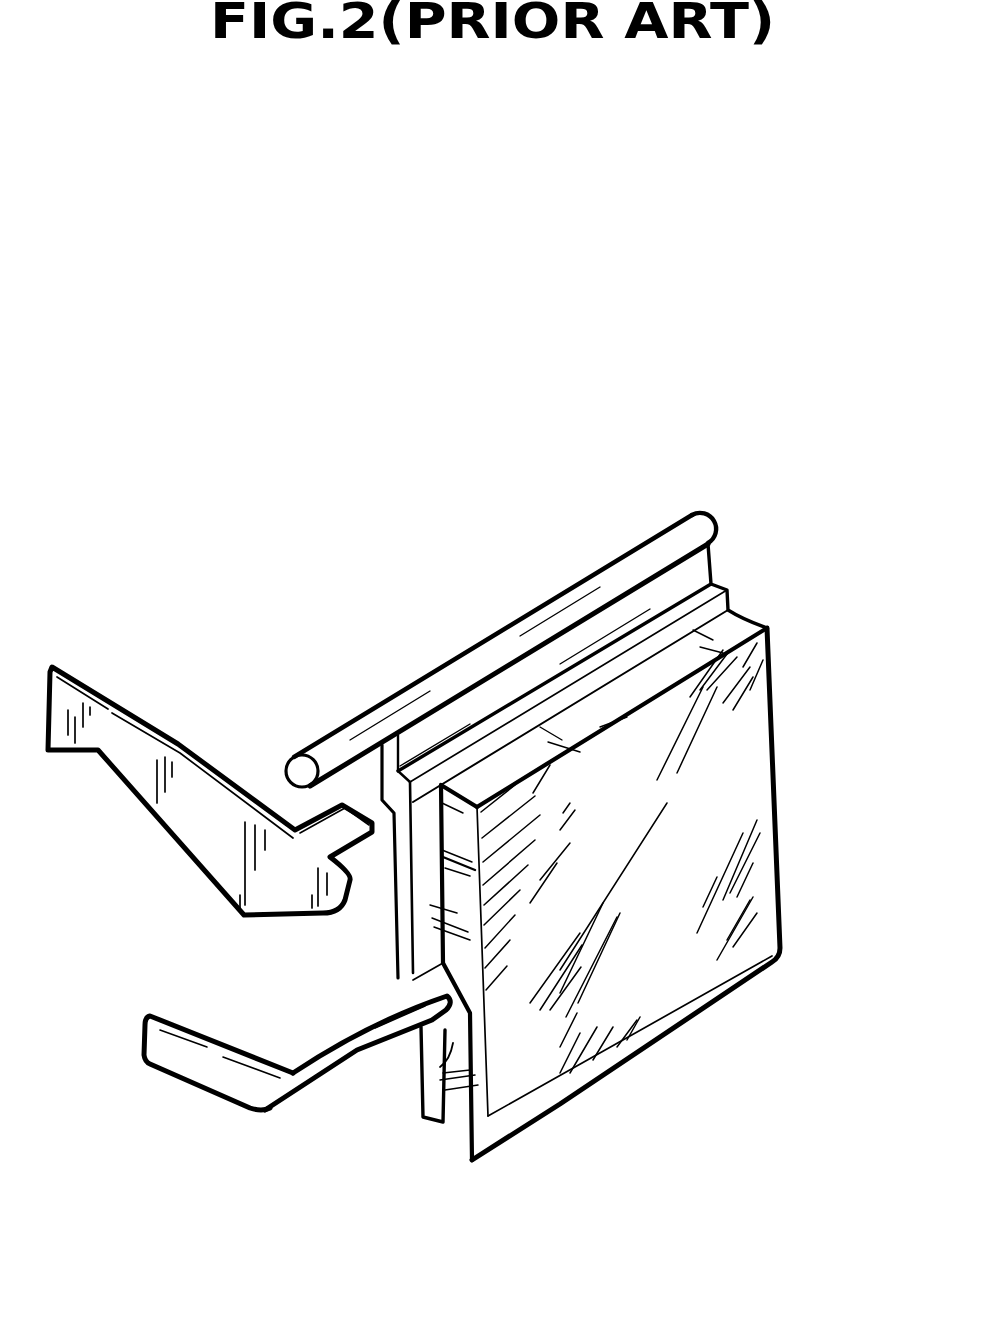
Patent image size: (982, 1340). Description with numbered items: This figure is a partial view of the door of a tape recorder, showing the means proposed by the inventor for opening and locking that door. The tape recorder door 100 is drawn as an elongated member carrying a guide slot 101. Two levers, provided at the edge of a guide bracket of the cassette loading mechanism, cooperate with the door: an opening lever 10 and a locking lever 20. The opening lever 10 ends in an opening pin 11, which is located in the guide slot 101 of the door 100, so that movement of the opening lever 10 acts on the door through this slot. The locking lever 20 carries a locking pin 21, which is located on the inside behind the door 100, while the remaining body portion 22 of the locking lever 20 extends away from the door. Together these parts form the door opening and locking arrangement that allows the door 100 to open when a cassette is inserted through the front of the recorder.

The tape recorder door 100 is at (553, 534).
The guide slot 101 is at (427, 1055).
The locking lever 20 is at (181, 690).
The locking pin 21 is at (305, 748).
The body of slider 22 is at (207, 885).
The opening lever 10 is at (216, 1126).
The opening pin 11 is at (447, 995).